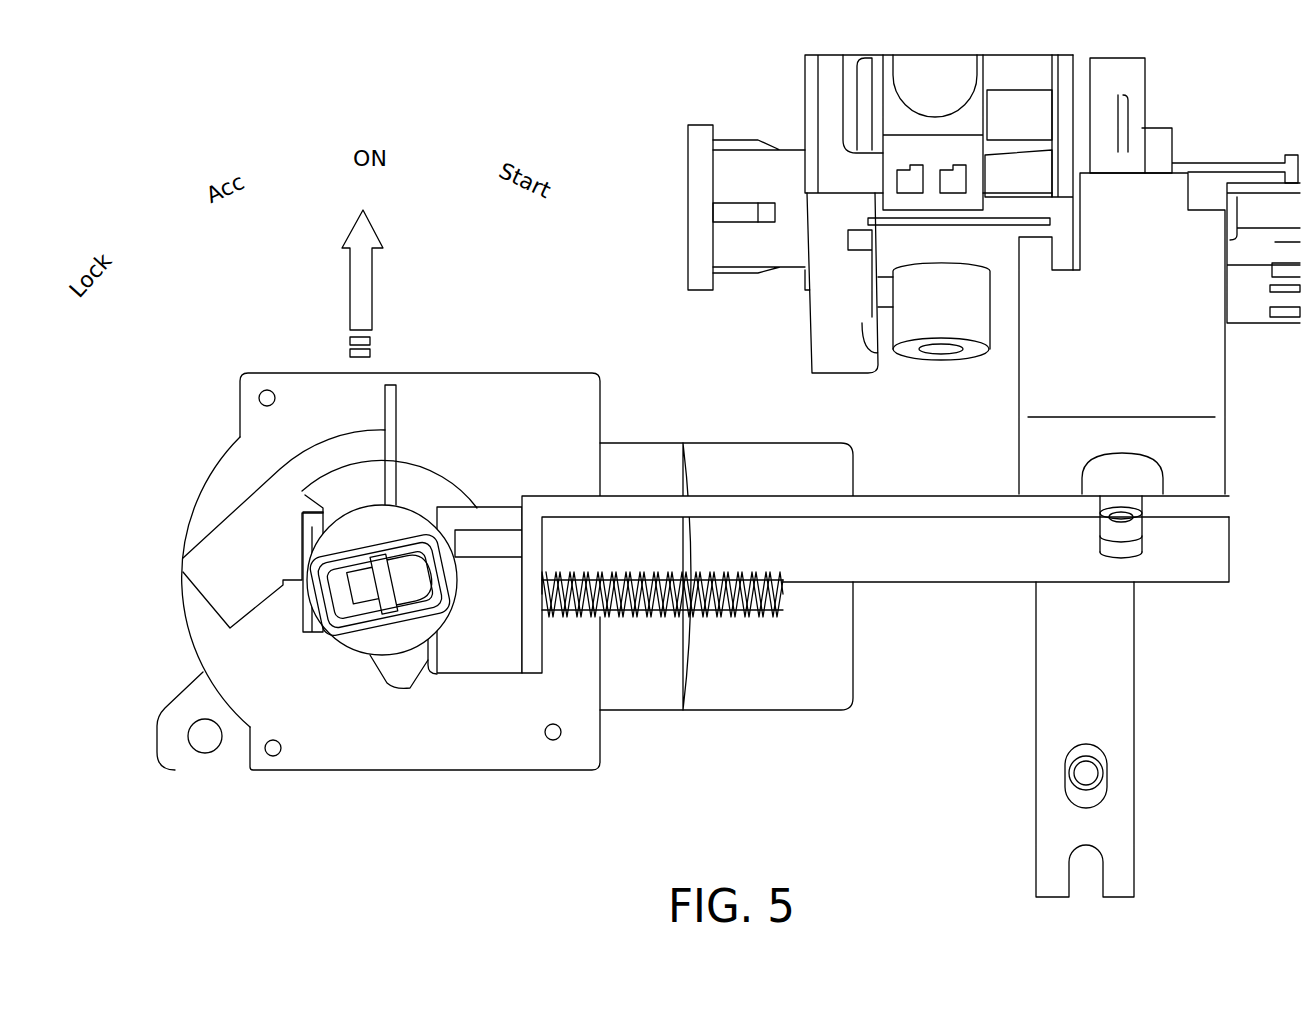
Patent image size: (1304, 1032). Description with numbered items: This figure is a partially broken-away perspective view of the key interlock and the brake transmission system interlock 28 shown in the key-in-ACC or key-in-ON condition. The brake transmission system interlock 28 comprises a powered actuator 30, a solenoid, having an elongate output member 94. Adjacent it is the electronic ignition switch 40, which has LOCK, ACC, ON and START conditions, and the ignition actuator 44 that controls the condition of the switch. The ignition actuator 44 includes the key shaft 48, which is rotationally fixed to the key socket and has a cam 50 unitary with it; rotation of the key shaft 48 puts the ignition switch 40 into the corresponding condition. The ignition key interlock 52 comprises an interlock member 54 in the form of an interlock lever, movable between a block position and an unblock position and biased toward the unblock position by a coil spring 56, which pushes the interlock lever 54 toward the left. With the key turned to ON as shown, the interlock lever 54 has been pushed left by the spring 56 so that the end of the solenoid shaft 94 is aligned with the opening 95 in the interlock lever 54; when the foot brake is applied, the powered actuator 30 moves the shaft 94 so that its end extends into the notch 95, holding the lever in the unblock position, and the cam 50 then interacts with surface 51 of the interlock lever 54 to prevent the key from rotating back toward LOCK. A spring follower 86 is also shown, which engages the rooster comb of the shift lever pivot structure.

The brake transmission system interlock 28 is at (1206, 142).
The powered actuator 30 is at (1213, 387).
The electronic ignition switch 40 is at (299, 388).
The ignition actuator 44 is at (360, 520).
The key shaft 48 is at (407, 517).
The cam 50 is at (393, 675).
The surface of the key interlock lever 51 is at (427, 677).
The ignition key interlock 52 is at (912, 492).
The interlock member 54 is at (948, 567).
The coil spring 56 is at (767, 617).
The spring follower 86 is at (1053, 705).
The elongate output member 94 is at (1130, 521).
The opening 95 is at (1103, 545).